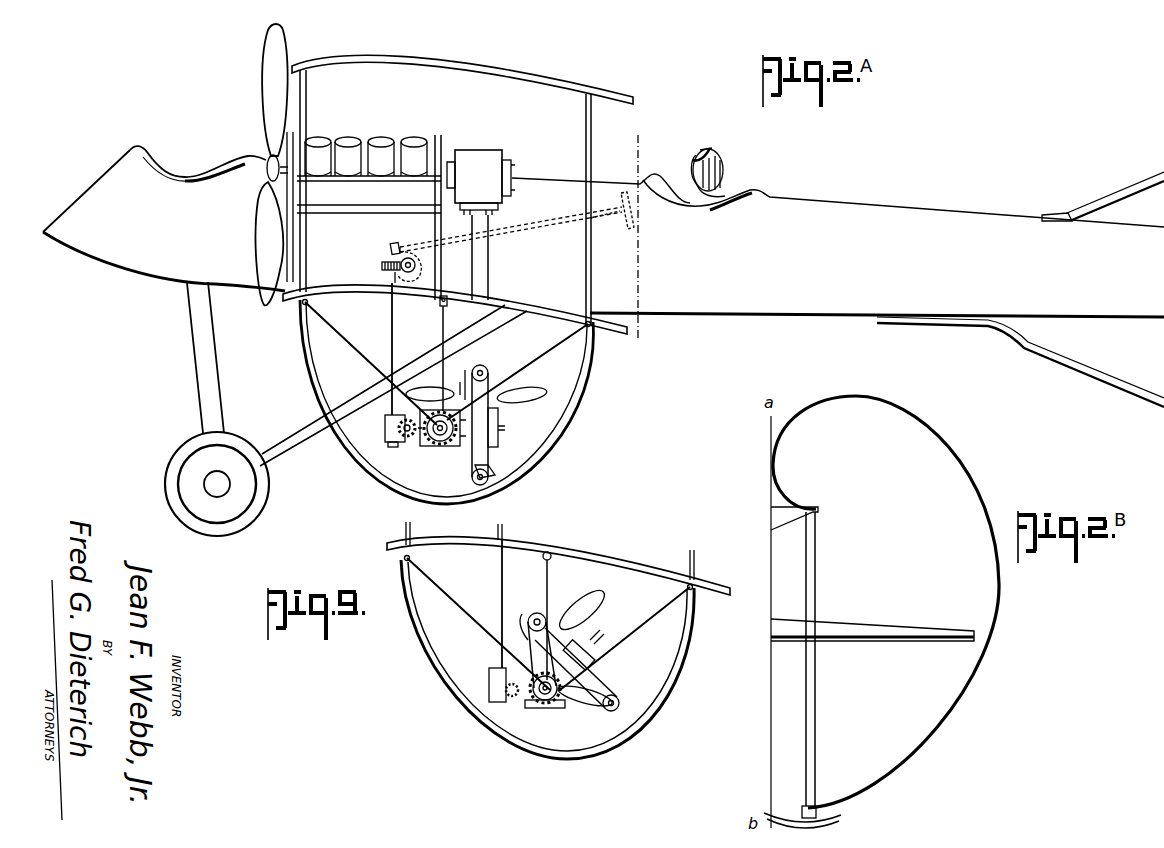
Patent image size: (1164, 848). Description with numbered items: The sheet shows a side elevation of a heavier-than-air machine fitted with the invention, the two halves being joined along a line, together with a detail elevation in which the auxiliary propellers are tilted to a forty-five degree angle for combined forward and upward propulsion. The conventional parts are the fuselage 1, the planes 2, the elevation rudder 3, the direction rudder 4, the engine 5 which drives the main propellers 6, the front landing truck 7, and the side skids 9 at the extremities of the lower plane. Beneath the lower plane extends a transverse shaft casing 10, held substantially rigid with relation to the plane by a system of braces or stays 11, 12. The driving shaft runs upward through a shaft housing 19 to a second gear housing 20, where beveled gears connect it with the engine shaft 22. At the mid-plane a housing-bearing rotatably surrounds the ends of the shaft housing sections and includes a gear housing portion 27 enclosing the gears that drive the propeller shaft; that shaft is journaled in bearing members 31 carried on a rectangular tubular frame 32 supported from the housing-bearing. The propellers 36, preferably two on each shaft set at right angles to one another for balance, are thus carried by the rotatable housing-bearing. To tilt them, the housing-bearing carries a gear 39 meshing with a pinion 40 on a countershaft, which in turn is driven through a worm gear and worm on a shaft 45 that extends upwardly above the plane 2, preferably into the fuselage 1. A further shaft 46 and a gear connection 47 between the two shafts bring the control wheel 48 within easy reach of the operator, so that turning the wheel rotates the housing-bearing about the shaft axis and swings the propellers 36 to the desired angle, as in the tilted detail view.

In FIG. 2A, the fuselage 1 is at (603, 269).
In FIG. 2A, the planes 2 is at (556, 80).
In FIG. 9, the planes 2 is at (466, 546).
In FIG. 2A, the elevation rudder 3 is at (635, 237).
In FIG. 2B, the elevation rudder 3 is at (898, 630).
In FIG. 2B, the direction rudder 4 is at (881, 612).
In FIG. 2A, the engine 5 is at (365, 183).
In FIG. 2A, the main propellers 6 is at (265, 97).
In FIG. 2A, the front landing truck 7 is at (204, 482).
In FIG. 2A, the side skids 9 is at (557, 428).
In FIG. 9, the side skids 9 is at (450, 696).
In FIG. 2A, the shaft casing 10 is at (428, 448).
In FIG. 9, the shaft casing 10 is at (545, 703).
In FIG. 2A, the braces or stays 11 is at (552, 356).
In FIG. 9, the braces or stays 11 is at (668, 610).
In FIG. 2A, the braces or stays 12 is at (441, 322).
In FIG. 9, the braces or stays 12 is at (547, 582).
In FIG. 2A, the shaft housing 19 is at (486, 288).
In FIG. 2A, the second gear housing 20 is at (485, 182).
In FIG. 2A, the engine shaft 22 is at (449, 160).
In FIG. 2A, the gear housing portion 27 is at (499, 427).
In FIG. 9, the gear housing portion 27 is at (585, 650).
In FIG. 9, the bearing members 31 is at (538, 618).
In FIG. 2A, the rectangular tubular frame 32 is at (486, 452).
In FIG. 9, the rectangular tubular frame 32 is at (600, 670).
In FIG. 2A, the propellers 36 is at (528, 390).
In FIG. 9, the propellers 36 is at (595, 600).
In FIG. 2A, the gear 39 is at (405, 440).
In FIG. 2A, the pinion 40 is at (384, 432).
In FIG. 2A, the shaft 45 is at (390, 322).
In FIG. 2A, the shaft 46 is at (558, 220).
In FIG. 2A, the gear connection 47 is at (396, 247).
In FIG. 2A, the control wheel 48 is at (635, 222).